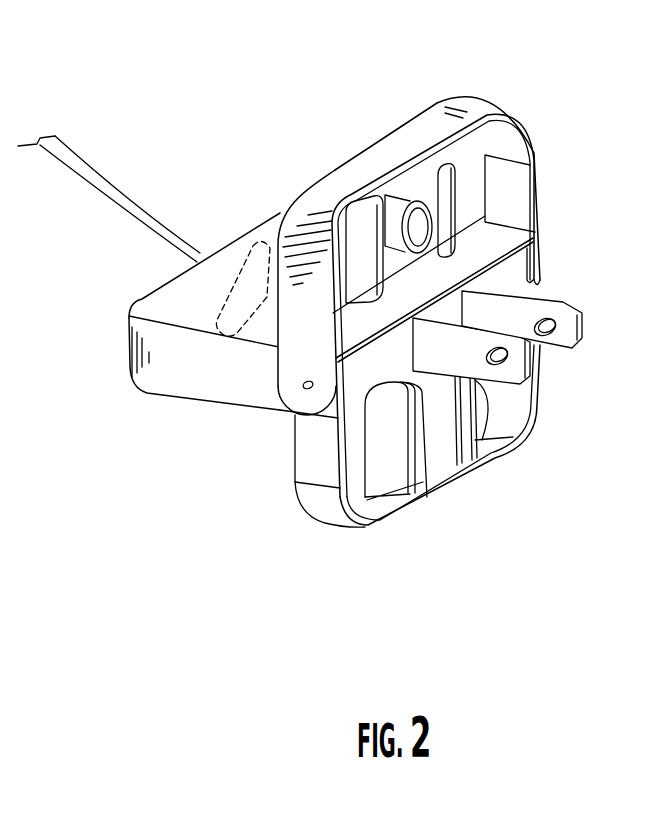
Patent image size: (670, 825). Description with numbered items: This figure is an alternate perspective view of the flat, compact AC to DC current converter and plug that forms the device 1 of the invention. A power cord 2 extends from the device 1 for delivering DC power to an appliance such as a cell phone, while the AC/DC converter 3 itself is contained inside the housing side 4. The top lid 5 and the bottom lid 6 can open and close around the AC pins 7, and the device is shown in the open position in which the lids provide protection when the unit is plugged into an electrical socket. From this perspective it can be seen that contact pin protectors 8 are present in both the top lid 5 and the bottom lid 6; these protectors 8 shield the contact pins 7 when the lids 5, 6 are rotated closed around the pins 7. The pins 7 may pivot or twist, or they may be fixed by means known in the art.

The converter 1 is at (260, 70).
The power cord 2 is at (155, 210).
The AC/DC converter 3 is at (247, 308).
The housing side 4 is at (204, 311).
The top lid 5 is at (340, 273).
The bottom lid 6 is at (378, 513).
The AC pins 7 is at (557, 343).
The contact pin protectors 8 is at (440, 173).